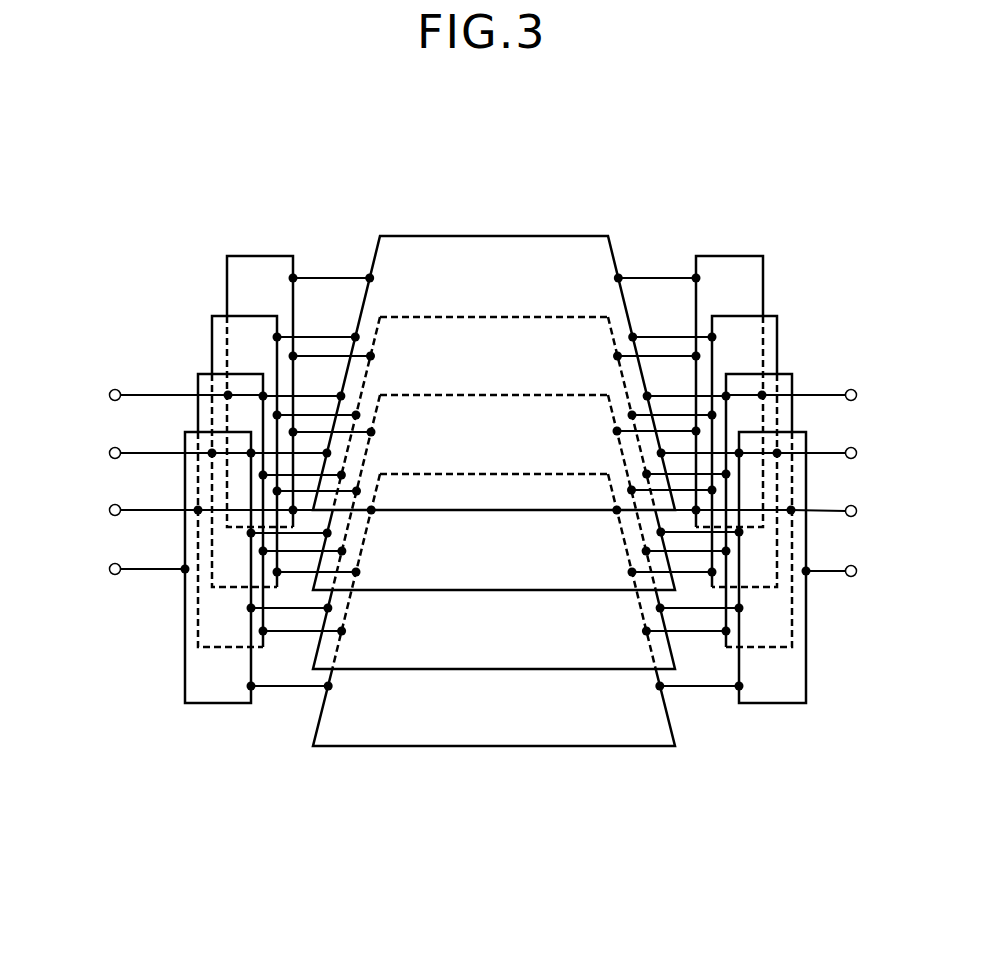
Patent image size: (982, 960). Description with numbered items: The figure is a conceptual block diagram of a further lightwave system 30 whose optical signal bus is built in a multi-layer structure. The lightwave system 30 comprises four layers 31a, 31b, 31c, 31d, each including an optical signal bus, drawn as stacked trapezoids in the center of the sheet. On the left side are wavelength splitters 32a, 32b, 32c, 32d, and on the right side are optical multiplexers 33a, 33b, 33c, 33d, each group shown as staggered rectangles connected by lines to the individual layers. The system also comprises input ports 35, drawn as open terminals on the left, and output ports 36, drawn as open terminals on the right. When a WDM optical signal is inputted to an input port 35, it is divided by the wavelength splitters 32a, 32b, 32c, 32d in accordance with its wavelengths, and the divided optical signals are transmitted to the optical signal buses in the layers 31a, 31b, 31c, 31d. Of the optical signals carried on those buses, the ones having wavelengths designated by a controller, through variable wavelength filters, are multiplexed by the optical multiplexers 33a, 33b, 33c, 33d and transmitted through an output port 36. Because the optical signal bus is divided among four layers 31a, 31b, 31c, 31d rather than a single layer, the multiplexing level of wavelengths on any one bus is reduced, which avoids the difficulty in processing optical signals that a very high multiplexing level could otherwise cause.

The lightwave system 30 is at (753, 224).
The layer 31a is at (572, 510).
The layer 31b is at (528, 590).
The layer 31c is at (450, 669).
The layer 31d is at (355, 746).
The wavelength splitter 32a is at (227, 284).
The wavelength splitter 32b is at (212, 338).
The wavelength splitter 32c is at (197, 413).
The wavelength splitter 32d is at (185, 655).
The optical multiplexer 33a is at (763, 291).
The optical multiplexer 33b is at (777, 338).
The optical multiplexer 33c is at (792, 412).
The optical multiplexer 33d is at (806, 676).
The input port 35 is at (108, 394).
The output port 36 is at (856, 389).